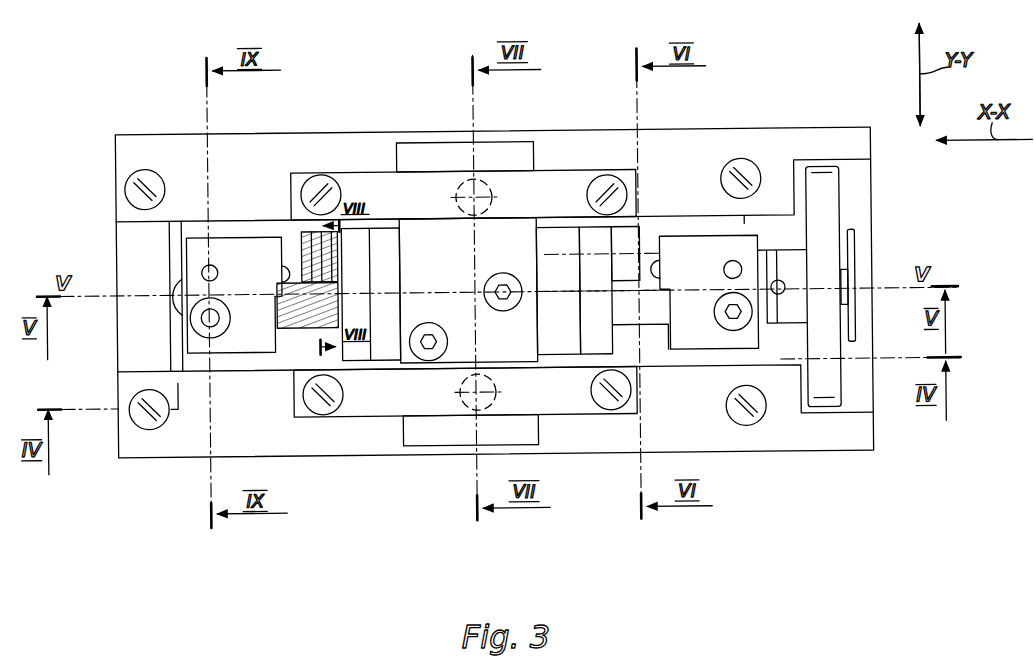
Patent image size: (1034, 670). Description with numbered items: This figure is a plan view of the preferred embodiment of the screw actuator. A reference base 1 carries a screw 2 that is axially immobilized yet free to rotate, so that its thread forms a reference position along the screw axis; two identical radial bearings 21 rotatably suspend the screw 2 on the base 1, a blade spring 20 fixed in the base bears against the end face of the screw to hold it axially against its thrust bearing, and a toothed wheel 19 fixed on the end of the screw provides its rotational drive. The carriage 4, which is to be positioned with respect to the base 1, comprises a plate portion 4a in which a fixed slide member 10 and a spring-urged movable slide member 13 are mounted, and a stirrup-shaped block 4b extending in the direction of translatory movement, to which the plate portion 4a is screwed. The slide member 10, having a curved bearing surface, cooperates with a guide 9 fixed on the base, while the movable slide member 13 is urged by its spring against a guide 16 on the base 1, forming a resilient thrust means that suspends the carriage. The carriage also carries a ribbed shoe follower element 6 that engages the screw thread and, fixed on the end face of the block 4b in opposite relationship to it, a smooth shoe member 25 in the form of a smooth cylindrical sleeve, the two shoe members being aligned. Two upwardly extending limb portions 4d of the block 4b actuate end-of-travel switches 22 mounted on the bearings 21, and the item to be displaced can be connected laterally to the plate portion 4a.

The reference base 1 is at (344, 126).
The screw 2 is at (650, 334).
The carriage 4 is at (437, 128).
The plate portion 4a is at (410, 140).
The block 4b is at (560, 236).
The limb portions 4d is at (380, 280).
The follower element 6 is at (300, 245).
The guide 9 is at (372, 400).
The slide member 10 is at (470, 410).
The movable slide member 13 is at (472, 180).
The guide 16 is at (510, 185).
The toothed wheel 19 is at (820, 185).
The blade spring 20 is at (856, 240).
The radial bearings 21 is at (195, 228).
The end-of-travel switches 22 is at (200, 256).
The smooth shoe member 25 is at (630, 240).